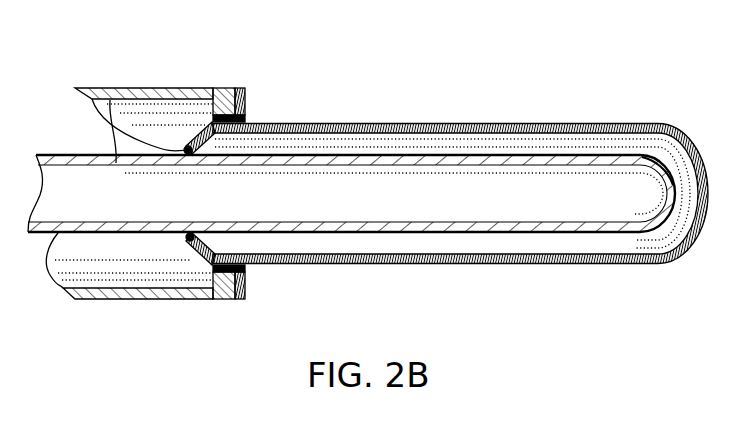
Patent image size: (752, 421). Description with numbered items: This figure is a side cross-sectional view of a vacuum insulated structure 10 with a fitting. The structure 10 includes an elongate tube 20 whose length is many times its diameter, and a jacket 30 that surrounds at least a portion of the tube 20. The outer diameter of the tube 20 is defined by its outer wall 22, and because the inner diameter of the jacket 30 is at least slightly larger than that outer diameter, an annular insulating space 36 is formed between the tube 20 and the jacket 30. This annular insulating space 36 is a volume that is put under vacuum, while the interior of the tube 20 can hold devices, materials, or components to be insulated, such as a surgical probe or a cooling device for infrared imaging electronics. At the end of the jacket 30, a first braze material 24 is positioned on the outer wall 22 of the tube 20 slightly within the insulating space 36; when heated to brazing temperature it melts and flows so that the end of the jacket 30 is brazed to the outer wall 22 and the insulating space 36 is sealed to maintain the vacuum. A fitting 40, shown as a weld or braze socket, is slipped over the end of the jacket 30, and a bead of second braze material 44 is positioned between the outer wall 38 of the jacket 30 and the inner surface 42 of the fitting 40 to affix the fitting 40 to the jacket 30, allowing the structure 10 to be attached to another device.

The structure 10 is at (674, 94).
The tube 20 is at (552, 158).
The outer wall 22 is at (438, 157).
The first braze material 24 is at (128, 137).
The jacket 30 is at (607, 123).
The annular insulating space 36 is at (351, 146).
The outer wall 38 is at (493, 123).
The fitting 40 is at (118, 88).
The inner surface 42 is at (240, 88).
The second braze material 44 is at (247, 121).